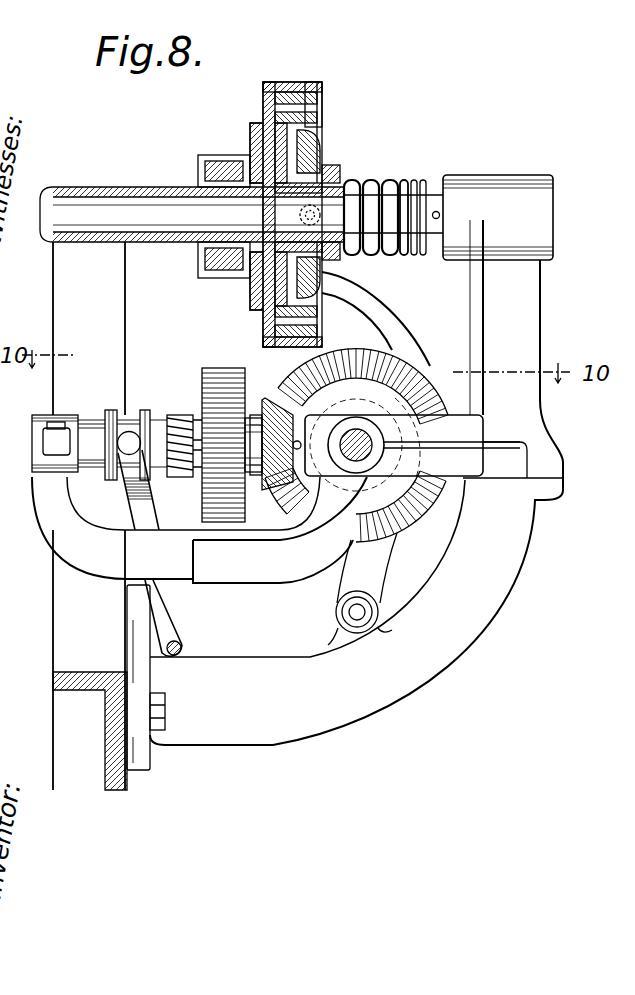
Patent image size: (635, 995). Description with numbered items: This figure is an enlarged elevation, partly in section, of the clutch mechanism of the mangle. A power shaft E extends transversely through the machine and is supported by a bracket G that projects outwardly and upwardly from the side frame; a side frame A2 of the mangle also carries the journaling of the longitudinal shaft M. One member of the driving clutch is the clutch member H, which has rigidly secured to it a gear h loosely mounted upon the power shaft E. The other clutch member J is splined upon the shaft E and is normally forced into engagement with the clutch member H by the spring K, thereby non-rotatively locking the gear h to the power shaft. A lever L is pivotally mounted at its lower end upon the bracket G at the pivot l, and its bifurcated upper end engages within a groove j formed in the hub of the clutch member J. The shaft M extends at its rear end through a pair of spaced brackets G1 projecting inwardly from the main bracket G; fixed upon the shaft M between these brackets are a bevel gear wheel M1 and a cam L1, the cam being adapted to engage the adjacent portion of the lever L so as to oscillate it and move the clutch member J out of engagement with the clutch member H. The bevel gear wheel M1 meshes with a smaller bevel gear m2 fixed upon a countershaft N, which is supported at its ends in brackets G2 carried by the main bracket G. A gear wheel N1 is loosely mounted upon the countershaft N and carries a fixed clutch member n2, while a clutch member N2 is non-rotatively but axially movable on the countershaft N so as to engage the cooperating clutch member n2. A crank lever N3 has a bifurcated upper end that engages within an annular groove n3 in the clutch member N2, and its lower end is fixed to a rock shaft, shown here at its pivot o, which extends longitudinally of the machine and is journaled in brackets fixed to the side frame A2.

The power shaft E is at (127, 207).
The gear h is at (210, 155).
The clutch member H is at (255, 91).
The clutch member J is at (322, 110).
The groove j is at (313, 170).
The spring K is at (380, 180).
The bracket G is at (356, 460).
The side frame A2 is at (62, 610).
The brackets G2 is at (60, 510).
The clutch member N2 is at (107, 413).
The annular groove n3 is at (140, 392).
The countershaft N is at (183, 458).
The clutch member n2 is at (192, 413).
The gear wheel N1 is at (218, 368).
The bevel gear m2 is at (267, 398).
The bevel gear wheel M1 is at (425, 382).
The brackets G1 is at (470, 430).
The shaft M is at (372, 446).
The lever L is at (392, 327).
The cam L1 is at (290, 555).
The crank lever N3 is at (150, 553).
The pin o is at (184, 645).
The pivot l is at (368, 618).